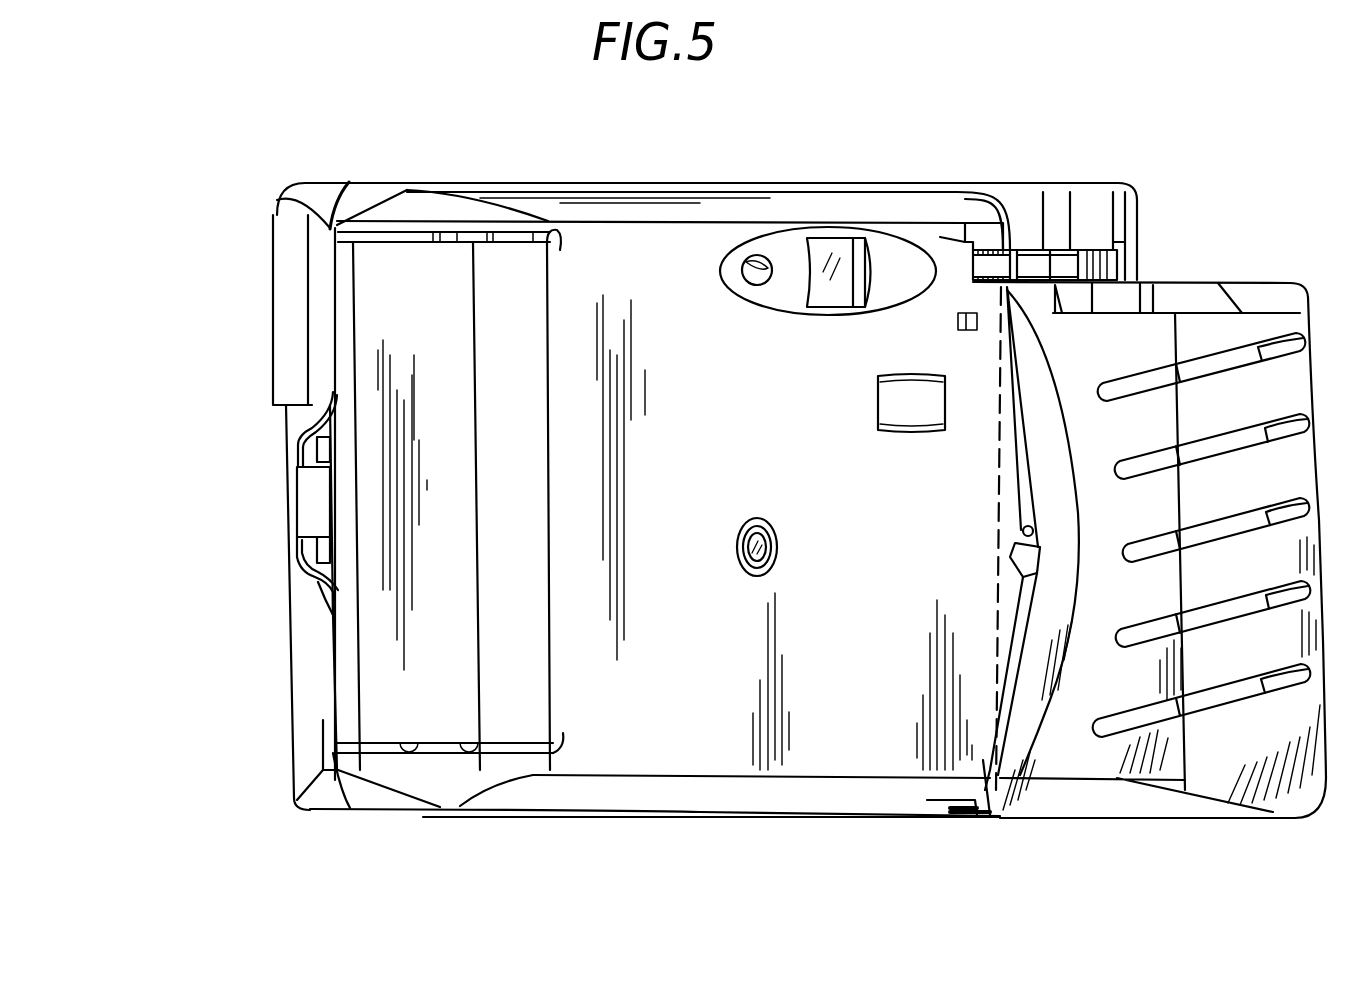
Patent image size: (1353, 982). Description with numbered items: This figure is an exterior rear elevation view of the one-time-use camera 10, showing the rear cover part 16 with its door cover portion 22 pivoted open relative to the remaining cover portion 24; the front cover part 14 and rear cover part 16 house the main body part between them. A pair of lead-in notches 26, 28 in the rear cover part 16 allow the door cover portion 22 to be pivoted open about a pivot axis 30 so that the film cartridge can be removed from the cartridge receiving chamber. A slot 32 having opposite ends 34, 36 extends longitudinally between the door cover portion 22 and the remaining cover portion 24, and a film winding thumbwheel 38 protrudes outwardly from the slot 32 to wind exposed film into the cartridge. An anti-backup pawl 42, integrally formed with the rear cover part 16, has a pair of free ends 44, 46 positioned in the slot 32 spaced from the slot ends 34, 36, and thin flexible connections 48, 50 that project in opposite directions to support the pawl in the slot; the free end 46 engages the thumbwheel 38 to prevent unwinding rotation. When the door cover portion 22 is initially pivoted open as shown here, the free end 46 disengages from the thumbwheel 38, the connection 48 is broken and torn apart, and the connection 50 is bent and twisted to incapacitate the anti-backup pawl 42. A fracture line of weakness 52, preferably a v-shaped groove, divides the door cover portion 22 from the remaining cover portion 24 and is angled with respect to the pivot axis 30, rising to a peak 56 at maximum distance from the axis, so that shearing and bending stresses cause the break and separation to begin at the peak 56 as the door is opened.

The one-time-use camera 10 is at (410, 116).
The front cover part 14 is at (335, 185).
The rear cover part 16 is at (378, 314).
The door cover portion 22 is at (1110, 793).
The remaining cover portion 24 is at (788, 770).
The lead-in notch 26 is at (1000, 288).
The lead-in notch 28 is at (977, 817).
The pivot axis 30 is at (997, 573).
The slot 32 is at (1117, 250).
The slot end 34 is at (962, 242).
The slot end 36 is at (1137, 282).
The film winding thumbwheel 38 is at (1058, 248).
The anti-backup pawl 42 is at (1013, 228).
The free end 44 is at (973, 277).
The free end 46 is at (1085, 285).
The thin flexible connection 48 is at (1000, 248).
The thin flexible connection 50 is at (1025, 313).
The fracture line of weakness 52 is at (1023, 528).
The peak 56 is at (1000, 575).